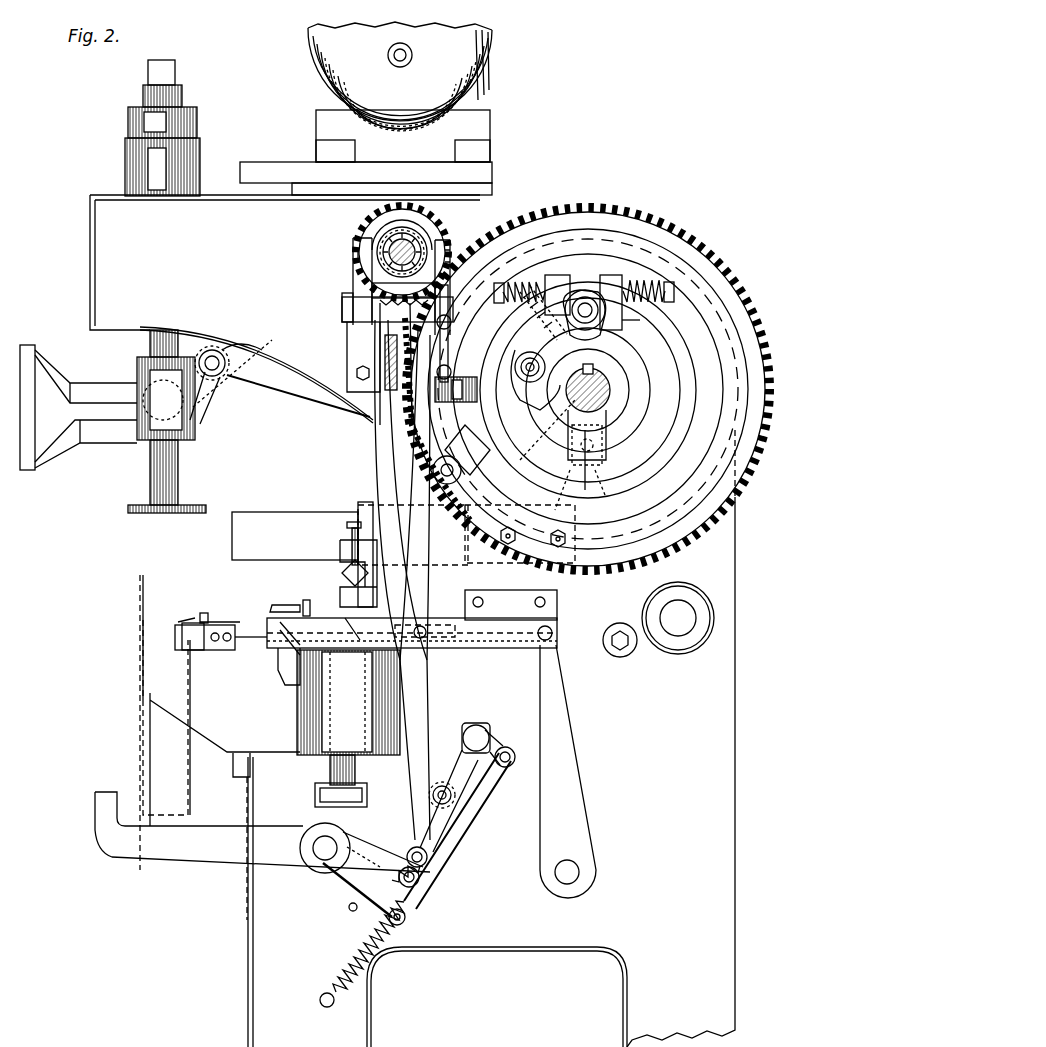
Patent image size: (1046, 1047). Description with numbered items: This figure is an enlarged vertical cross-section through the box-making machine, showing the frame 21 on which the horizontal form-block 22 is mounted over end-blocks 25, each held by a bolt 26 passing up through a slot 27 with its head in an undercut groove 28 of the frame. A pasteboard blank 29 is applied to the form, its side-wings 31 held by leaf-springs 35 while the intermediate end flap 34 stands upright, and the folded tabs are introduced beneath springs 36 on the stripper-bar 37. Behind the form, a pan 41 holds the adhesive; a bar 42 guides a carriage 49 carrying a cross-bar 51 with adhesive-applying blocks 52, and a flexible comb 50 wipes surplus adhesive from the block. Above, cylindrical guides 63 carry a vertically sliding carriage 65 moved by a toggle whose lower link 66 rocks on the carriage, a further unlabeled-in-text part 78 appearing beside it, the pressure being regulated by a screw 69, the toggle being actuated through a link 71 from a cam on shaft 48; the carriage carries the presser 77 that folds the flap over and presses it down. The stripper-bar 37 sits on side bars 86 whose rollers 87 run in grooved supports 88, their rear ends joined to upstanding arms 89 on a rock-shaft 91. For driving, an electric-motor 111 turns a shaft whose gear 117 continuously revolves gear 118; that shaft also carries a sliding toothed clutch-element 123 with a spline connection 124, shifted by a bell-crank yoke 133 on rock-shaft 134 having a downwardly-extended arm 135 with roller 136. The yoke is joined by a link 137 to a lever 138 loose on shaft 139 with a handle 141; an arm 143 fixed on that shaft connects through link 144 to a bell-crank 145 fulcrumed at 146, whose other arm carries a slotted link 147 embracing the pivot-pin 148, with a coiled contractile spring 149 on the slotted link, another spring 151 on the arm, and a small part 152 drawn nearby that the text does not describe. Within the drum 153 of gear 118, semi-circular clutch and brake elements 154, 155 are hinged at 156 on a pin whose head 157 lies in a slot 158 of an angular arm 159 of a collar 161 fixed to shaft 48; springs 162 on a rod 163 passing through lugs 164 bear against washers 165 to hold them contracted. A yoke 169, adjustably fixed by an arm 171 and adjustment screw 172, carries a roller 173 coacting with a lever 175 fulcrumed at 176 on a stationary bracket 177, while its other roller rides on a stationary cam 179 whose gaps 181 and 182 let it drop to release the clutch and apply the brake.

The frame 21 is at (412, 621).
The form-block 22 is at (210, 650).
The end-block 25 is at (232, 801).
The bolt 26 is at (330, 770).
The slot 27 is at (298, 730).
The undercut groove 28 is at (315, 797).
The pasteboard blank 29 is at (140, 725).
The side-wing 31 is at (160, 750).
The end flap 34 is at (138, 602).
The leaf-spring 35 is at (204, 622).
The spring 36 is at (178, 620).
The stripper-bar 37 is at (222, 620).
The pan 41 is at (425, 618).
The bar 42 is at (245, 520).
The shaft 48 is at (610, 388).
The carriage 49 is at (360, 500).
The comb 50 is at (305, 598).
The cross-bar 51 is at (345, 565).
The adhesive-applying block 52 is at (340, 572).
The cylindrical guide 63 is at (150, 478).
The carriage 65 is at (140, 448).
The lower toggle link 66 is at (225, 375).
The screw 69 is at (182, 97).
The link 71 is at (285, 410).
The presser 77 is at (30, 345).
The link 78 is at (200, 395).
The side bar 86 is at (250, 620).
The roller 87 is at (290, 672).
The support 88 is at (268, 650).
The upstanding arm 89 is at (570, 802).
The rock-shaft 91 is at (572, 865).
The electric-motor 111 is at (470, 70).
The gear 117 is at (440, 245).
The gear 118 is at (655, 225).
The sliding toothed clutch-element 123 is at (378, 238).
The key or spline connection 124 is at (402, 240).
The bell-crank yoke 133 is at (355, 282).
The rock-shaft 134 is at (342, 304).
The downwardly-extended arm 135 is at (452, 348).
The roller 136 is at (452, 402).
The link 137 is at (375, 466).
The lever 138 is at (385, 828).
The shaft 139 is at (320, 855).
The handle 141 is at (113, 838).
The arm 143 is at (345, 885).
The link 144 is at (460, 830).
The bell-crank 145 is at (497, 742).
The fulcrum 146 is at (472, 722).
The slotted link 147 is at (430, 800).
The pivot-pin 148 is at (428, 862).
The coiled contractile spring 149 is at (390, 915).
The spring 151 is at (392, 960).
The pin 152 is at (348, 910).
The drum or flange 153 is at (672, 428).
The friction clutch and brake element 154 is at (532, 468).
The friction clutch and brake element 155 is at (660, 383).
The hinge 156 is at (614, 505).
The pin head 157 is at (520, 534).
The slot 158 is at (544, 490).
The angular arm 159 is at (570, 435).
The collar 161 is at (600, 375).
The spring 162 is at (548, 280).
The rod 163 is at (650, 300).
The lug or ear 164 is at (596, 280).
The washer 165 is at (500, 290).
The yoke 169 is at (512, 352).
The arm 171 is at (593, 368).
The adjustment screw 172 is at (452, 303).
The roller 173 is at (515, 365).
The lever 175 is at (461, 454).
The fulcrum 176 is at (413, 535).
The stationary bracket 177 is at (396, 418).
The stationary cam 179 is at (640, 420).
The depression or gap 181 is at (527, 441).
The depression or gap 182 is at (605, 470).